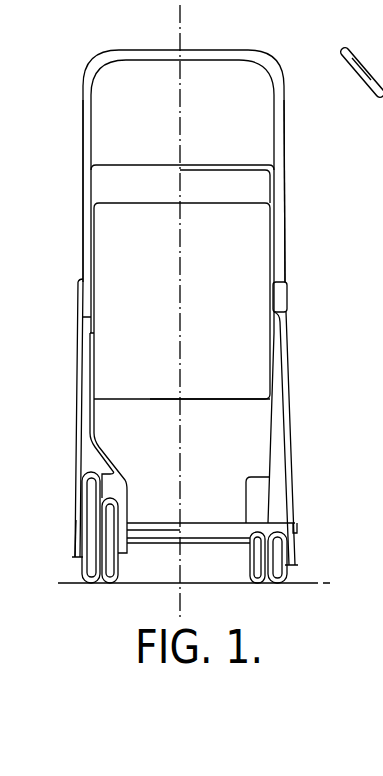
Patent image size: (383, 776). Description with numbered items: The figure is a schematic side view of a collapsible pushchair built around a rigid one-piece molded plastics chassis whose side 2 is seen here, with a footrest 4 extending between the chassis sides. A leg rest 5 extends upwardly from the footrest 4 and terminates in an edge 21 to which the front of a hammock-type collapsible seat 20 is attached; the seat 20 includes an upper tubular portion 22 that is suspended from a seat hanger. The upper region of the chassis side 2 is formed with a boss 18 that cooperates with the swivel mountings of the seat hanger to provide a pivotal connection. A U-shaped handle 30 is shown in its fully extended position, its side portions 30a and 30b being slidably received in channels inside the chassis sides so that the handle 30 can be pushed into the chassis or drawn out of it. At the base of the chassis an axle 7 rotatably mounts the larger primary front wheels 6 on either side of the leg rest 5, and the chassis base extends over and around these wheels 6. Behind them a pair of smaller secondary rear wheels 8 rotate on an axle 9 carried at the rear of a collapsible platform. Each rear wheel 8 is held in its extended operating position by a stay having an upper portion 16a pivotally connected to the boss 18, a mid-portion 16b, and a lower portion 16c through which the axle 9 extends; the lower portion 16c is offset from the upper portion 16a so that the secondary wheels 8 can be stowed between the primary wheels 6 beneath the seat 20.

The U-shaped handle 30 is at (221, 53).
The side portion of the handle 30a is at (84, 127).
The side portion of the handle 30b is at (279, 148).
The upper tubular portion 22 is at (215, 185).
The collapsible seat 20 is at (250, 263).
The edge 21 is at (232, 397).
The boss 18 is at (282, 298).
The upper portion of the stay 16a is at (88, 373).
The mid-portion of the stay 16b is at (103, 456).
The lower portion of the stay 16c is at (122, 498).
The leg rest 5 is at (252, 432).
The side 2 is at (280, 467).
The footrest 4 is at (226, 525).
The axle 7 is at (73, 527).
The axle 9 is at (203, 543).
The primary front wheels 6 is at (82, 573).
The secondary rear wheels 8 is at (113, 582).